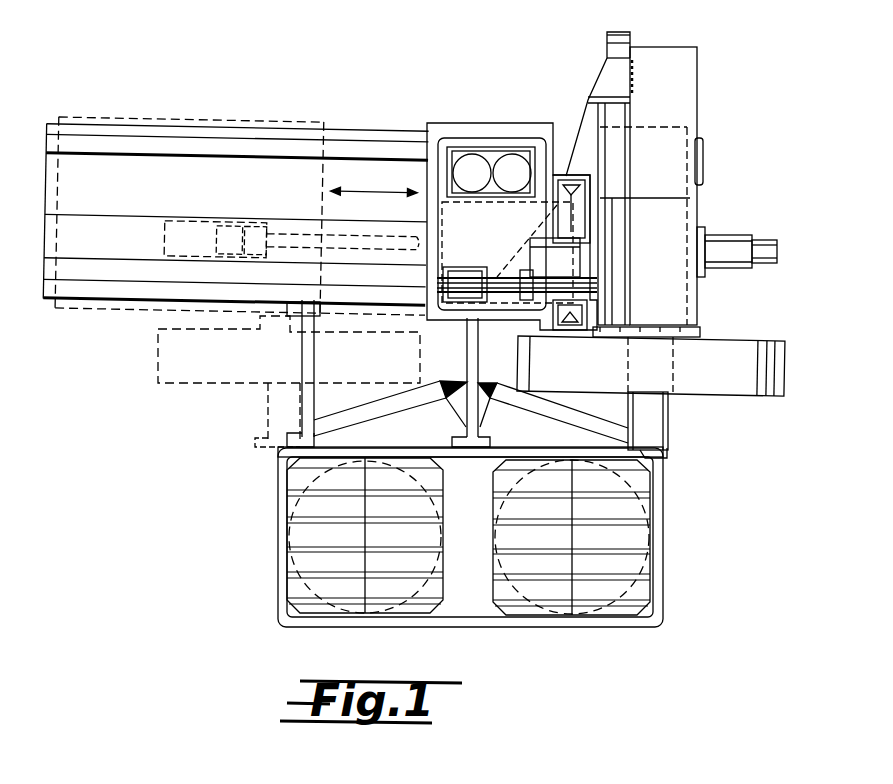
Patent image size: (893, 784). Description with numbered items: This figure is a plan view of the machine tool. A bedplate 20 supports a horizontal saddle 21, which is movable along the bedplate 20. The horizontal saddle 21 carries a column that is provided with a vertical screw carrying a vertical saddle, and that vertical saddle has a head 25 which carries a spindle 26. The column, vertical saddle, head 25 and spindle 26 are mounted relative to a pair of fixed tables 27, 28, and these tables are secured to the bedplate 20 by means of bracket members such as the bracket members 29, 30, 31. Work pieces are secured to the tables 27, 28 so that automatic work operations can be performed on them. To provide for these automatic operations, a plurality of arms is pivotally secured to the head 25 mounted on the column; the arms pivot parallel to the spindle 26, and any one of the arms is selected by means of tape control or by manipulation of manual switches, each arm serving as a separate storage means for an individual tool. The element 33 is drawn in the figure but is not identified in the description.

The beam 20 is at (338, 131).
The head housing 21 is at (510, 124).
The motor 25 is at (698, 293).
The support columns 26 is at (268, 415).
The right reel 27 is at (665, 548).
The left reel 28 is at (278, 548).
The left column 29 is at (302, 363).
The center column 30 is at (467, 370).
The braces 31 is at (628, 410).
The mounting plates 33 is at (740, 382).